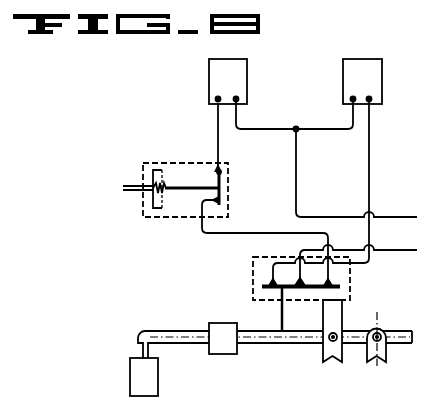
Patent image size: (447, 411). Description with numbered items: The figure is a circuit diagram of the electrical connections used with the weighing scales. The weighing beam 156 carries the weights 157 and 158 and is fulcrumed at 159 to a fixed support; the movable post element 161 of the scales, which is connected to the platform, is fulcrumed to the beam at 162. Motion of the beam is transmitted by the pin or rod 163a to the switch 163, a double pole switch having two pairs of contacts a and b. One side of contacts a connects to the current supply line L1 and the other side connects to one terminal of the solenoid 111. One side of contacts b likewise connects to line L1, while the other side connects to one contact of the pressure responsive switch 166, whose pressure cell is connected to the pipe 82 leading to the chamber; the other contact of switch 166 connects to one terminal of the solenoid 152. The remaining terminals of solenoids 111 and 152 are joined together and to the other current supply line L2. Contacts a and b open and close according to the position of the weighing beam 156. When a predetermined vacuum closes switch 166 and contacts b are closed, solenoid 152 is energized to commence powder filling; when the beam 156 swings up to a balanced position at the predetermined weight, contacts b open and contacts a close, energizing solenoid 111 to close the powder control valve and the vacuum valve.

The solenoid 152 is at (209, 66).
The solenoid 111 is at (377, 70).
The pressure responsive switch 166 is at (183, 177).
The pipe 82 is at (132, 194).
The current supply line L2 is at (367, 177).
The current supply line L1 is at (369, 261).
The switch 163 is at (294, 274).
The contacts a is at (262, 279).
The contacts b is at (340, 279).
The pin or rod 163a is at (282, 322).
The weighing beam 156 is at (172, 332).
The weight 157 is at (155, 378).
The weight 158 is at (229, 348).
The fulcrum 159 is at (330, 347).
The movable post element 161 is at (378, 360).
The fulcrum 162 is at (383, 333).